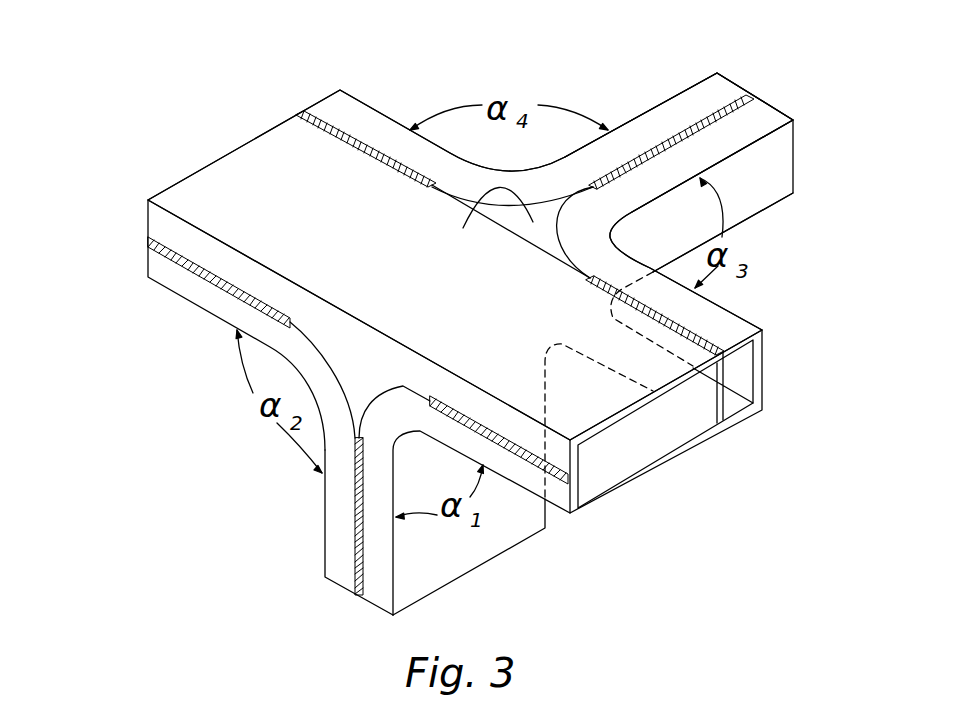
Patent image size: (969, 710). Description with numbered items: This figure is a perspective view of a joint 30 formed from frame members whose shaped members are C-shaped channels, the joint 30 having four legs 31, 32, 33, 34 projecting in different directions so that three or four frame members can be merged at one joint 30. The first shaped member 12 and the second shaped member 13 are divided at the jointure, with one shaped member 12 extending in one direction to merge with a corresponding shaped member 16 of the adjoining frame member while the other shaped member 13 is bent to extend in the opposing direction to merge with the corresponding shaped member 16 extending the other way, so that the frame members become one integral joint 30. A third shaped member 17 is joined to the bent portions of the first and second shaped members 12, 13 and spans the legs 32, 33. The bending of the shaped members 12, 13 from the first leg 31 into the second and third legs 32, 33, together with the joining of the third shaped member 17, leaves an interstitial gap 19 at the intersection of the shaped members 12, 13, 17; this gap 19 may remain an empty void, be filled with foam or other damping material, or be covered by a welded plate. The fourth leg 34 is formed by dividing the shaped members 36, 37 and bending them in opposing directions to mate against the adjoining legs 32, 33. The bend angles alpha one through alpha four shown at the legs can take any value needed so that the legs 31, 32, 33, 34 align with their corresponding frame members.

The first shaped member 12 is at (338, 562).
The second shaped member 13 is at (453, 547).
The corresponding shaped member 16 is at (175, 268).
The third shaped member 17 is at (243, 170).
The interstitial gap 19 is at (364, 380).
The joint 30 is at (145, 475).
The first leg 31 is at (337, 585).
The second leg 32 is at (184, 177).
The third leg 33 is at (712, 430).
The fourth leg 34 is at (756, 117).
The shaped member of fourth leg 36 is at (762, 177).
The shaped member of fourth leg 37 is at (705, 100).